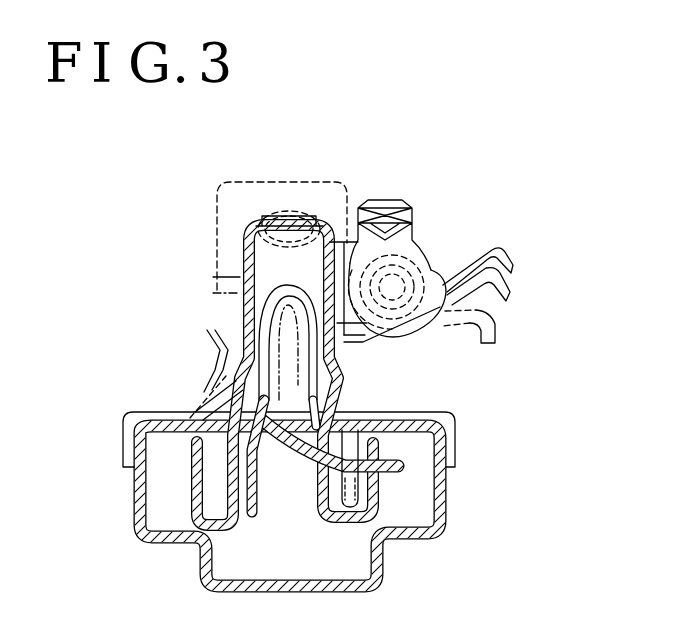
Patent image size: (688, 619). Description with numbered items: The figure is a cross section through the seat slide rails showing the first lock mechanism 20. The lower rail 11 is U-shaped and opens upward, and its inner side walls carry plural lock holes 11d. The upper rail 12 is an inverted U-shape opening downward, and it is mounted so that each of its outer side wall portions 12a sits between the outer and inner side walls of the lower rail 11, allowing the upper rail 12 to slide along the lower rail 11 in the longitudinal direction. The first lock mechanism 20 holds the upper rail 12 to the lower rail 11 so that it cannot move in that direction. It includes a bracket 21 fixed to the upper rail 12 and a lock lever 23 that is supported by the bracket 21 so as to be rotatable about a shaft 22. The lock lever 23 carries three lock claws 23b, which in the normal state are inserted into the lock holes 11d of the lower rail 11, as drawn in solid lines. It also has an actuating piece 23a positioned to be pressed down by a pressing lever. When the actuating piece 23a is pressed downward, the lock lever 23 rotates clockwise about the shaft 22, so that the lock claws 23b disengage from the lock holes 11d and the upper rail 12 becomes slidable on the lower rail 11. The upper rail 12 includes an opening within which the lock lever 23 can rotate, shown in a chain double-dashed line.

The lower rail 11 is at (447, 506).
The lock holes 11d is at (352, 453).
The upper rail 12 is at (252, 215).
The outer side wall portions 12a is at (188, 503).
The first lock mechanism 20 is at (162, 312).
The bracket 21 is at (418, 240).
The shaft 22 is at (436, 258).
The lock lever 23 is at (347, 350).
The actuating piece 23a is at (385, 472).
The lock claws 23b is at (495, 256).